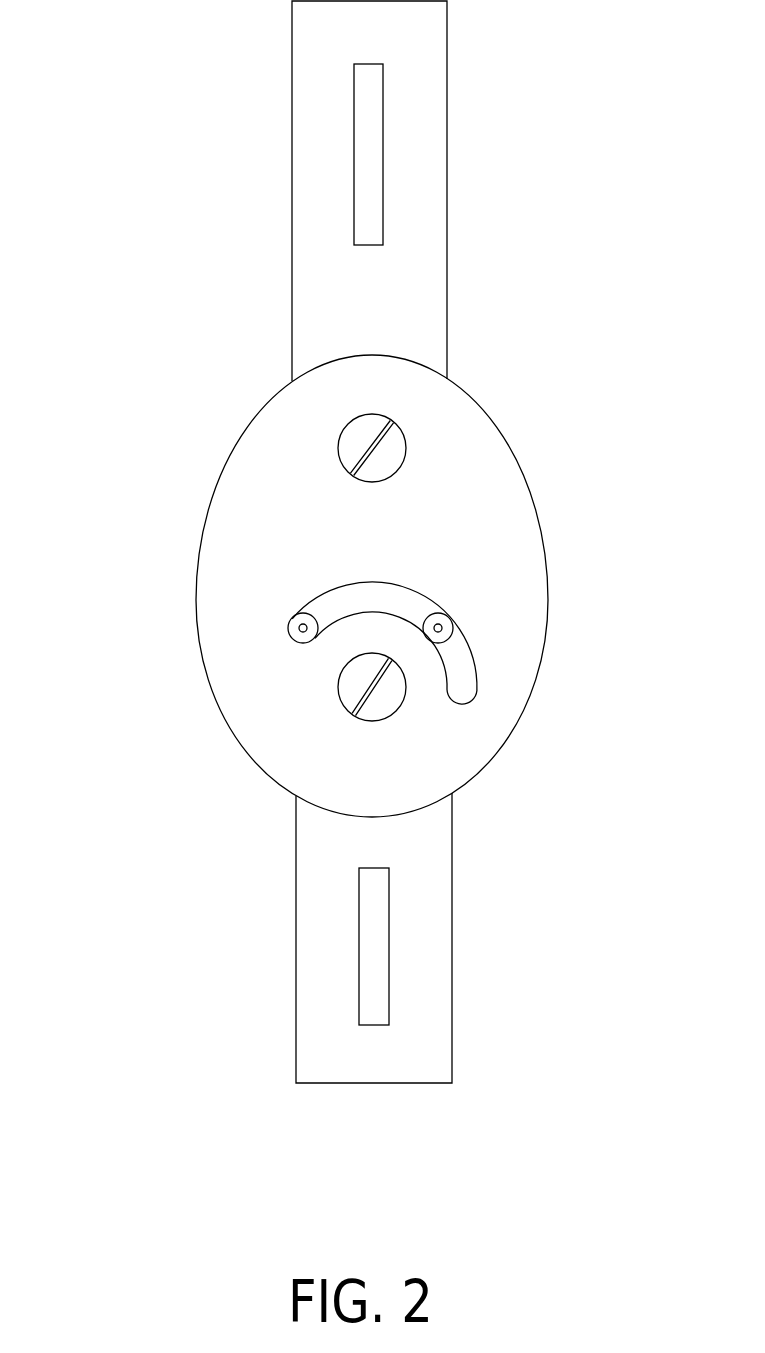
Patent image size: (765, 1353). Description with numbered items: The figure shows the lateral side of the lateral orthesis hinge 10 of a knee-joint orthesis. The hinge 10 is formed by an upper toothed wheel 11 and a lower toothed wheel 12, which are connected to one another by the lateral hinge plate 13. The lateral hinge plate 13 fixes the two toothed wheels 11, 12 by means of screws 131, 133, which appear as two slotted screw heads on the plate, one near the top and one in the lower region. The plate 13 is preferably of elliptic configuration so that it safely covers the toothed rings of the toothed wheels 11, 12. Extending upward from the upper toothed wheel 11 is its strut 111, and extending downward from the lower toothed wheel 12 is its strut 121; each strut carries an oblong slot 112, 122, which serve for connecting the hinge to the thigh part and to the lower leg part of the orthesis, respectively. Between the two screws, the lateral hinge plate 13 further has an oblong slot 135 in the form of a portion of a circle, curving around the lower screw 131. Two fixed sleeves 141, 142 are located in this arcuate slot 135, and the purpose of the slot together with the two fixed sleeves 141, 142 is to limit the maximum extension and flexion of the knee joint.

The lateral orthesis hinge 10 is at (122, 1140).
The upper toothed wheel 11 is at (310, 302).
The strut 111 is at (310, 38).
The oblong slot 112 is at (368, 140).
The lower toothed wheel 12 is at (320, 851).
The strut 121 is at (325, 1046).
The oblong slot 122 is at (378, 957).
The lateral hinge plate 13 is at (262, 507).
The screw 131 is at (350, 683).
The screw 133 is at (343, 440).
The oblong slot 135 is at (463, 684).
The fixed sleeve 141 is at (302, 621).
The fixed sleeve 142 is at (450, 615).